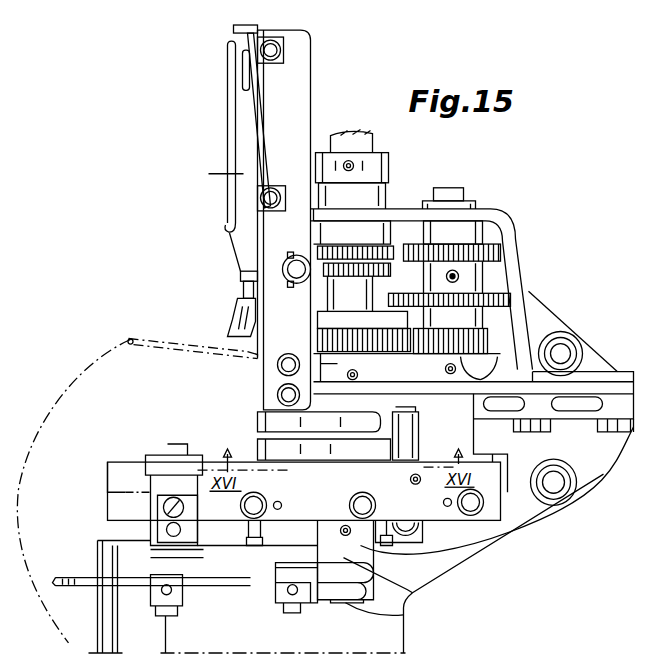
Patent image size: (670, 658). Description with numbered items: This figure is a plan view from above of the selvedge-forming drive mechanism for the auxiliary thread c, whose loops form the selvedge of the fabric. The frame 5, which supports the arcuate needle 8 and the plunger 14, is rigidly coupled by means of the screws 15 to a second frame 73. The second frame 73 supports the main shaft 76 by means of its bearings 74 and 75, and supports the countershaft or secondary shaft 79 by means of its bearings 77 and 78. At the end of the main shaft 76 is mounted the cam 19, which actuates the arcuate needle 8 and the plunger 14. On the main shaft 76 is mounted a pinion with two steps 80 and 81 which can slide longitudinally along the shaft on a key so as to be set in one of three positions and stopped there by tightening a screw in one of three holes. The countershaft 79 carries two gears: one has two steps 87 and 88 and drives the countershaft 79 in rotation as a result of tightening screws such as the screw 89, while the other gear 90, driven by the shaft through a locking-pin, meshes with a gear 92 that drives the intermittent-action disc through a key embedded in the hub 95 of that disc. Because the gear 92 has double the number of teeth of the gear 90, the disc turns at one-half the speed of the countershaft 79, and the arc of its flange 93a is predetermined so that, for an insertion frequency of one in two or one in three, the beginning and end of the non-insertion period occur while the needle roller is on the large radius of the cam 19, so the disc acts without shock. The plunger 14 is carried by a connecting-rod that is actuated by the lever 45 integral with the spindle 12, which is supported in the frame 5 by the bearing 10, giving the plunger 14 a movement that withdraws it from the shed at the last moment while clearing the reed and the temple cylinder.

The auxiliary thread c is at (226, 125).
The frame 5 is at (606, 482).
The arcuate needle 8 is at (143, 338).
The bearing 10 is at (457, 567).
The pin (spindle) 12 is at (405, 624).
The plunger 14 is at (74, 575).
The screws 15 is at (625, 462).
The cam 19 is at (257, 444).
The lever 45 is at (412, 590).
The second frame 73 is at (512, 228).
The bearing 74 is at (265, 382).
The bearing 75 is at (378, 184).
The main shaft 76 is at (372, 142).
The bearing 77 is at (462, 382).
The bearing 78 is at (478, 206).
The countershaft 79 is at (451, 190).
The pinion step 80 is at (393, 247).
The pinion step 81 is at (347, 272).
The gear step 87 is at (500, 251).
The gear step 88 is at (513, 301).
The screw 89 is at (457, 277).
The gear 90 is at (488, 340).
The gear 92 is at (257, 354).
The flange 93a is at (257, 418).
The hub 95 is at (418, 442).